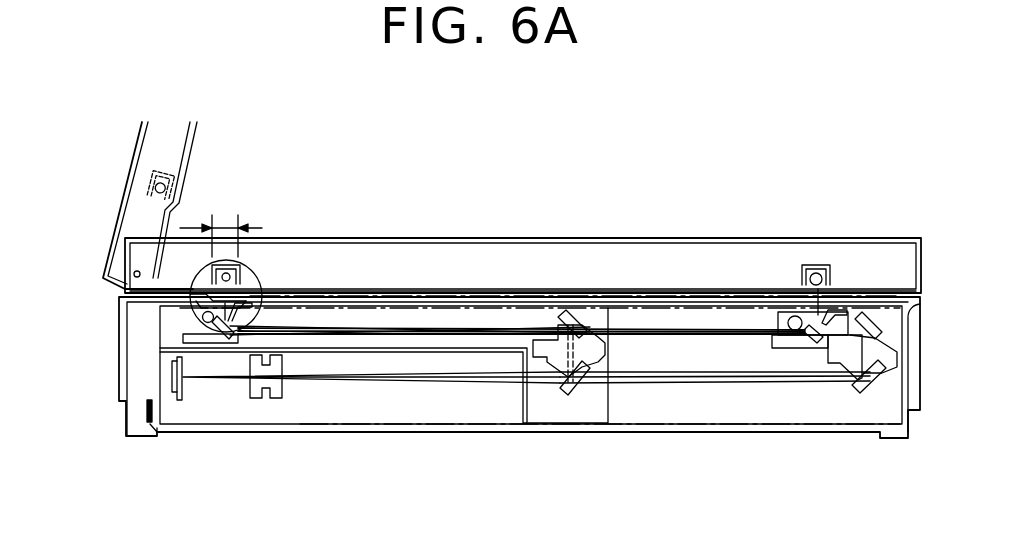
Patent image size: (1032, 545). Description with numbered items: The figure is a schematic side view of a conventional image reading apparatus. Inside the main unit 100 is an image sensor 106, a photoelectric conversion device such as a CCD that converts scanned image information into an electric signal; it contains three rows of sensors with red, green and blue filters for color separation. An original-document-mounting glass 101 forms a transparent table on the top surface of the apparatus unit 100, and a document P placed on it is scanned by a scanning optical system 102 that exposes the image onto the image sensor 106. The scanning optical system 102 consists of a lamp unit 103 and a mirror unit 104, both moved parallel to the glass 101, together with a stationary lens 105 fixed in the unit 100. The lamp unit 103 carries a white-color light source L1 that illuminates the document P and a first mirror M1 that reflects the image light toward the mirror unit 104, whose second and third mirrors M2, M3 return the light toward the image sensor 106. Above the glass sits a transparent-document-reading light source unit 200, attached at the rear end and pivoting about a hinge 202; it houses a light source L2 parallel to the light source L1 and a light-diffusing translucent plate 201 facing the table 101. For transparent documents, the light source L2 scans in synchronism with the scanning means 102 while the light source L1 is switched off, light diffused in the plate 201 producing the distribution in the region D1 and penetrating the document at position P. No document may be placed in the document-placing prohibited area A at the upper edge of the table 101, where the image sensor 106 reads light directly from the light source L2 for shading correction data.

The main unit 100 is at (148, 440).
The original-document-mounting glass 101 is at (352, 302).
The scanning optical system 102 is at (468, 420).
The lamp unit 103 is at (200, 324).
The mirror unit 104 is at (547, 362).
The stationary lens 105 is at (273, 400).
The image sensor 106 is at (190, 386).
The transparent-document-reading light source unit 200 is at (635, 240).
The light-diffusing translucent plate 201 is at (390, 291).
The hinge 202 is at (134, 272).
The document P is at (511, 297).
The document-placing prohibited area A is at (221, 226).
The region D1 is at (258, 282).
The white-color light source L1 is at (196, 326).
The light source L2 is at (241, 274).
The first mirror M1 is at (226, 345).
The second mirror M2 is at (590, 332).
The third mirror M3 is at (567, 384).